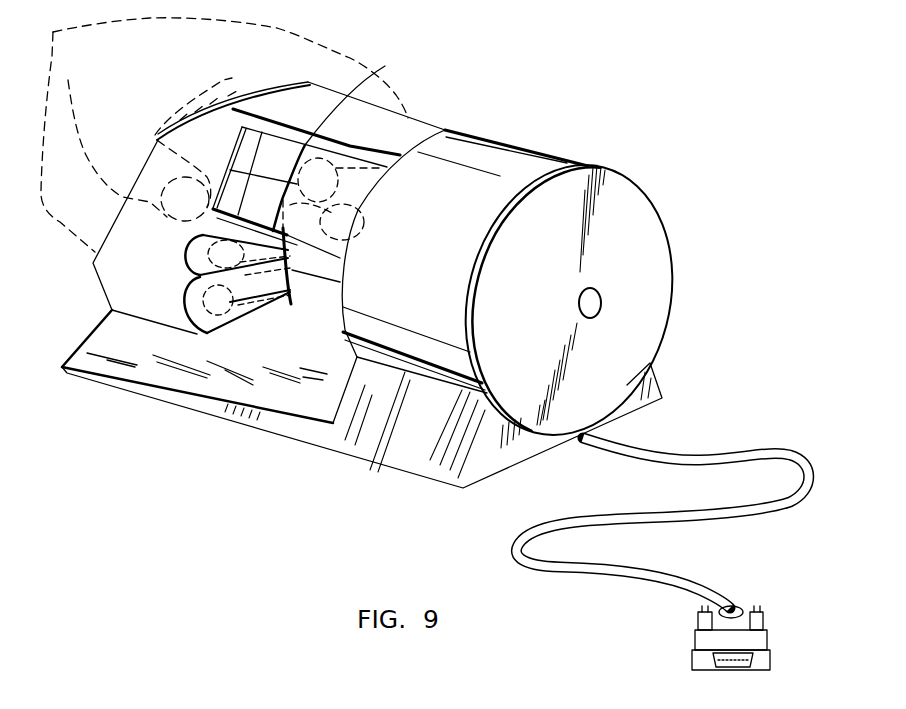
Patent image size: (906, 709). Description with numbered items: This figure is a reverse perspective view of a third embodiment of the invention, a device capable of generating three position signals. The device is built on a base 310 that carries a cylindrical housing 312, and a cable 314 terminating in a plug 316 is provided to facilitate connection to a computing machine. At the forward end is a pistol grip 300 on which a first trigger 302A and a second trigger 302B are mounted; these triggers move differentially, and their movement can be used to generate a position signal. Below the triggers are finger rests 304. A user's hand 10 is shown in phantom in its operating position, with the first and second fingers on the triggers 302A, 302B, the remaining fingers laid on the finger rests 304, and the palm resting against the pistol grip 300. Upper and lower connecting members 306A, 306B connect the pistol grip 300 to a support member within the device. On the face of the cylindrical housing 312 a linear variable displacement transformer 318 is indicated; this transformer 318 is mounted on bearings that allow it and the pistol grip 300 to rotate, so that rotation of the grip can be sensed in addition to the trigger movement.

The user's hand 10 is at (289, 28).
The pistol grip 300 is at (165, 249).
The first trigger 302A is at (386, 67).
The second trigger 302B is at (291, 304).
The finger rests 304 is at (213, 276).
The upper connecting member 306A is at (400, 132).
The lower connecting member 306B is at (318, 186).
The base 310 is at (414, 430).
The cylindrical housing 312 is at (430, 251).
The cable 314 is at (707, 455).
The plug 316 is at (760, 638).
The linear variable displacement transformer 318 is at (590, 304).